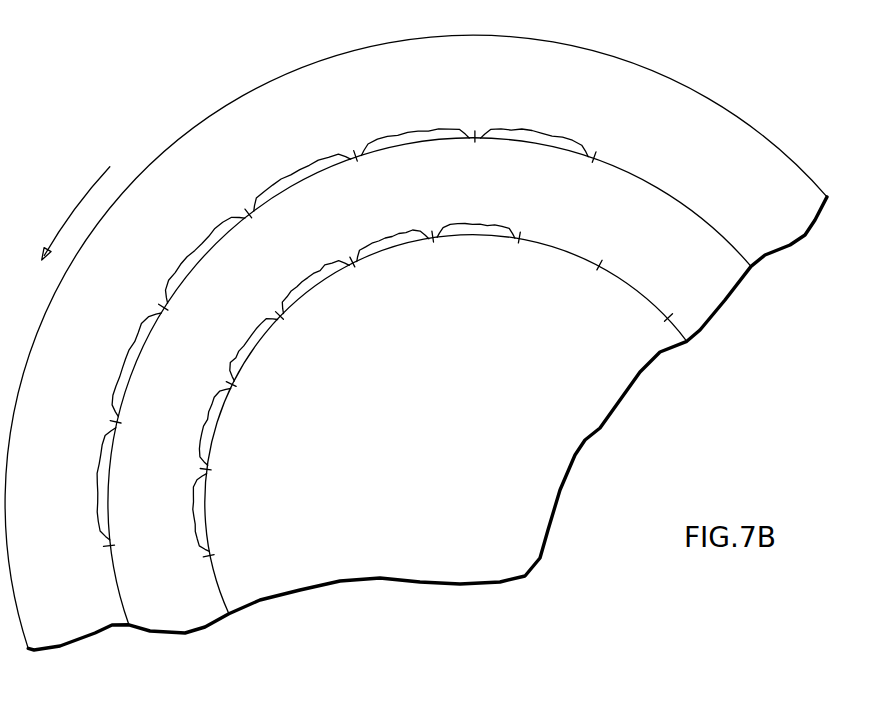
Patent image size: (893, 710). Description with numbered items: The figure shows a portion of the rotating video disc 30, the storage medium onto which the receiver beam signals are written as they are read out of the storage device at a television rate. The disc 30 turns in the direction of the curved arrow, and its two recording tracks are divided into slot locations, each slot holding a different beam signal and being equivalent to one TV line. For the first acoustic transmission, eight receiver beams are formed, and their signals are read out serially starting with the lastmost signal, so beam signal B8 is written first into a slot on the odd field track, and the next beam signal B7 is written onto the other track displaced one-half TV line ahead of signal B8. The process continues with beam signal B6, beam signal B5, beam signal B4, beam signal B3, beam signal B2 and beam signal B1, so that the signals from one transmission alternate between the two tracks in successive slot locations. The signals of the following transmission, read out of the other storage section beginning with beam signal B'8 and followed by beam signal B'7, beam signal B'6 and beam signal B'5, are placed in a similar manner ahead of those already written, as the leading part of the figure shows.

The video disc 30 is at (256, 93).
The beam signal B1 is at (249, 350).
The beam signal B2 is at (205, 260).
The beam signal B3 is at (315, 283).
The beam signal B4 is at (302, 178).
The beam signal B5 is at (393, 238).
The beam signal B6 is at (415, 130).
The beam signal B7 is at (476, 217).
The beam signal B8 is at (535, 131).
The beam signal B'5 is at (186, 513).
The beam signal B'6 is at (92, 484).
The beam signal B'7 is at (203, 427).
The beam signal B'8 is at (127, 365).